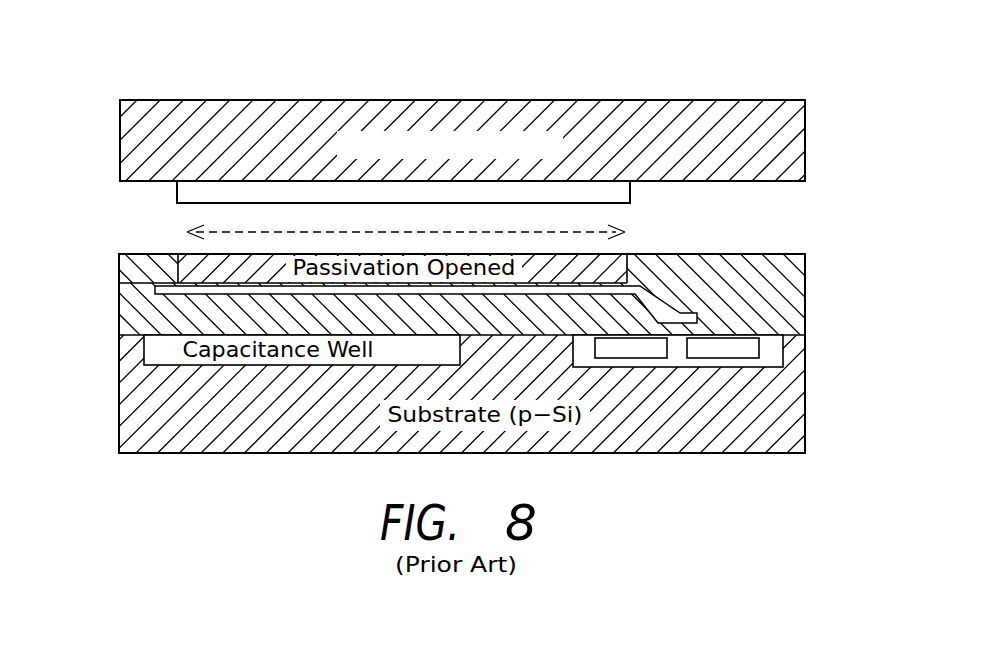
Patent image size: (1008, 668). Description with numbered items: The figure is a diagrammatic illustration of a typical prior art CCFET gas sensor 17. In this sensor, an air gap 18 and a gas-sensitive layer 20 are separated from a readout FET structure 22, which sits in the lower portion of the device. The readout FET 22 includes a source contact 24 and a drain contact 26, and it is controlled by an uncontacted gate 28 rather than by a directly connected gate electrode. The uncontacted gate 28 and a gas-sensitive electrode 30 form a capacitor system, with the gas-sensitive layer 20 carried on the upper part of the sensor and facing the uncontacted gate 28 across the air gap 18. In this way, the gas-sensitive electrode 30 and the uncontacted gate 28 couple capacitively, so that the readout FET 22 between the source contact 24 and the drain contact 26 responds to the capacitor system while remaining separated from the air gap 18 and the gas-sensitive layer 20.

The CCFET gas sensor 17 is at (468, 122).
The gas-sensitive electrode 30 is at (618, 100).
The gas-sensitive layer 20 is at (177, 193).
The air gap 18 is at (603, 230).
The uncontacted gate 28 is at (155, 288).
The source contact 24 is at (603, 359).
The readout FET structure 22 is at (679, 372).
The drain contact 26 is at (715, 359).